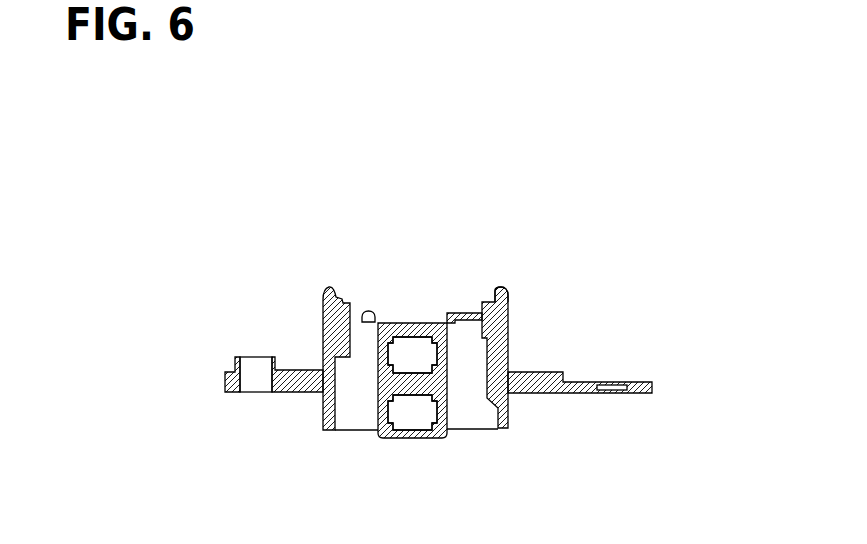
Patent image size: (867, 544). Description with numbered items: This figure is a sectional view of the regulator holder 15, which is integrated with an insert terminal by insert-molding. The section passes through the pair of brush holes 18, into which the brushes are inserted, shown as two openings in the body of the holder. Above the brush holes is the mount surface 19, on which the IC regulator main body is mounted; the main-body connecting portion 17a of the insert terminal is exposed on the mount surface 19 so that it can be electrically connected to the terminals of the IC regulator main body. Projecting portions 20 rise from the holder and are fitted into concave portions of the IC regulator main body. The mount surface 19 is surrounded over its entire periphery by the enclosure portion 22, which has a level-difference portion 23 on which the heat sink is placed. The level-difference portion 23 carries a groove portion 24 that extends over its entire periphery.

The regulator holder 15 is at (281, 303).
The groove portion 24 is at (347, 302).
The projecting portions 20 is at (370, 310).
The mount surface 19 is at (403, 322).
The brush holes 18 is at (420, 358).
The main-body connecting portion 17a is at (455, 313).
The level-difference portion 23 is at (485, 302).
The enclosure portion 22 is at (502, 287).